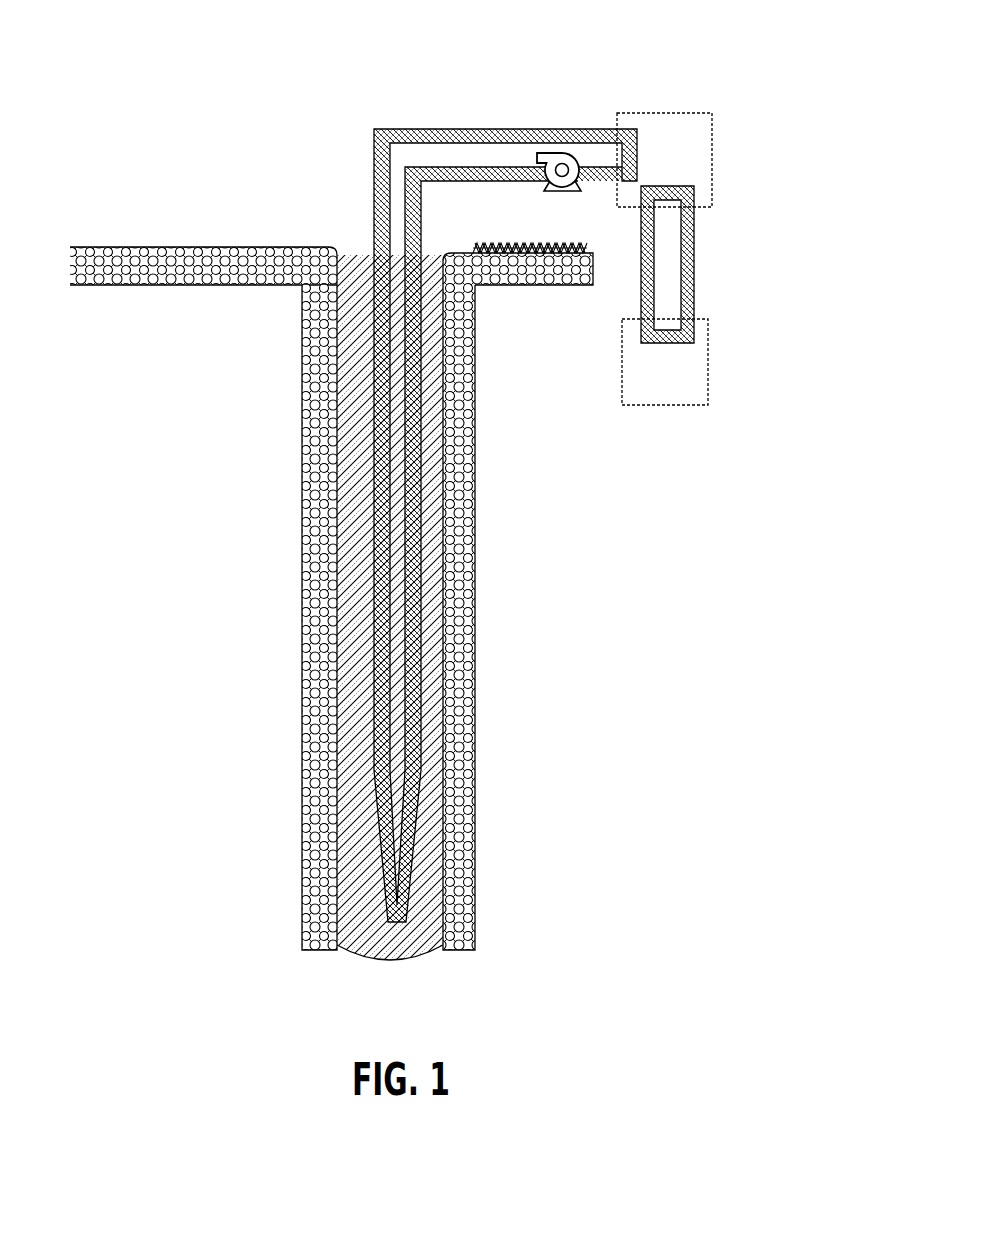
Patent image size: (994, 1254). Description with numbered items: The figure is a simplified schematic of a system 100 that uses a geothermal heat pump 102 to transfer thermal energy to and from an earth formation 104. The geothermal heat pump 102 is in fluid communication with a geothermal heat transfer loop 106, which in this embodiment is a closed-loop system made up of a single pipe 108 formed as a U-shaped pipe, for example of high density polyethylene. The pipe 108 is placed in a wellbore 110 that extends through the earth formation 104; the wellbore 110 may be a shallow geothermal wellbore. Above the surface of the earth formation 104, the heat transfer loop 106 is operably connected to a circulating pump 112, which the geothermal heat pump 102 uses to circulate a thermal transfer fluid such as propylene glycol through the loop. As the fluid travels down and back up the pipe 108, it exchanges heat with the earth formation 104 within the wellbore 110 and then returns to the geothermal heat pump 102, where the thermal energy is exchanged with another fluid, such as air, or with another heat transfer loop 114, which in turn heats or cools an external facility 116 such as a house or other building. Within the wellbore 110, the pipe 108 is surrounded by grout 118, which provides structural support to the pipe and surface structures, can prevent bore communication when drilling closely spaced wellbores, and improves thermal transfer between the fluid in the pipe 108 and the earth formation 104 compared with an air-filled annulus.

The system 100 is at (722, 53).
The geothermal heat pump 102 is at (712, 152).
The earth formation 104 is at (256, 543).
The geothermal heat transfer loop 106 is at (452, 190).
The pipe 108 is at (503, 128).
The wellbore 110 is at (475, 582).
The circulating pump 112 is at (562, 184).
The another heat transfer loop 114 is at (708, 236).
The external facility 116 is at (708, 365).
The grout 118 is at (350, 432).